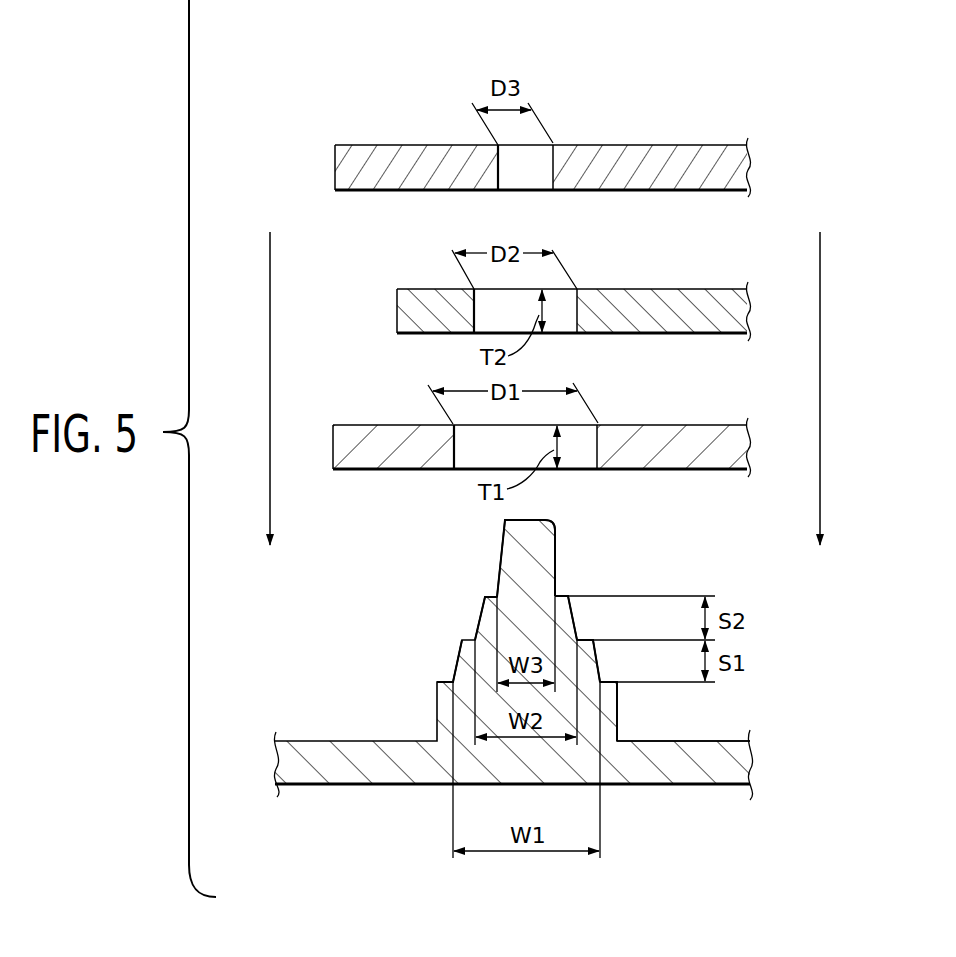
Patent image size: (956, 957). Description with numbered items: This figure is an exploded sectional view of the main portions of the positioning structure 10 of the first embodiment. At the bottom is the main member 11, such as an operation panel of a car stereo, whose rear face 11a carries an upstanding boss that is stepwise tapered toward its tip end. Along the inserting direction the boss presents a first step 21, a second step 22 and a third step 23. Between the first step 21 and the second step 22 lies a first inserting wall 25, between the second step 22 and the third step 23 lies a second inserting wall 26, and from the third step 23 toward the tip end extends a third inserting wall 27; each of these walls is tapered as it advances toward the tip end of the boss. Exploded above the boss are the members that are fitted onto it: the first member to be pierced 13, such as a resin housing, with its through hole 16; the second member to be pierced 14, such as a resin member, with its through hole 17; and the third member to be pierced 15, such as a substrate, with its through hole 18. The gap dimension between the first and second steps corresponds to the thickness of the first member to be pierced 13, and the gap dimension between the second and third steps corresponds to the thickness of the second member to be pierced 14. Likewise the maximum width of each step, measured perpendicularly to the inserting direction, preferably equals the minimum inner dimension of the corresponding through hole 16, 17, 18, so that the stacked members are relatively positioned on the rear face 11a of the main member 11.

The positioning structure 10 is at (754, 92).
The main member 11 is at (357, 773).
The rear face 11a is at (695, 752).
The first member to be pierced 13 is at (345, 432).
The second member to be pierced 14 is at (397, 303).
The third member to be pierced 15 is at (358, 167).
The through hole 16 is at (597, 446).
The through hole 17 is at (577, 312).
The through hole 18 is at (553, 177).
The first step 21 is at (606, 681).
The second step 22 is at (580, 637).
The third step 23 is at (566, 597).
The first inserting wall 25 is at (457, 655).
The second inserting wall 26 is at (479, 622).
The third inserting wall 27 is at (498, 550).